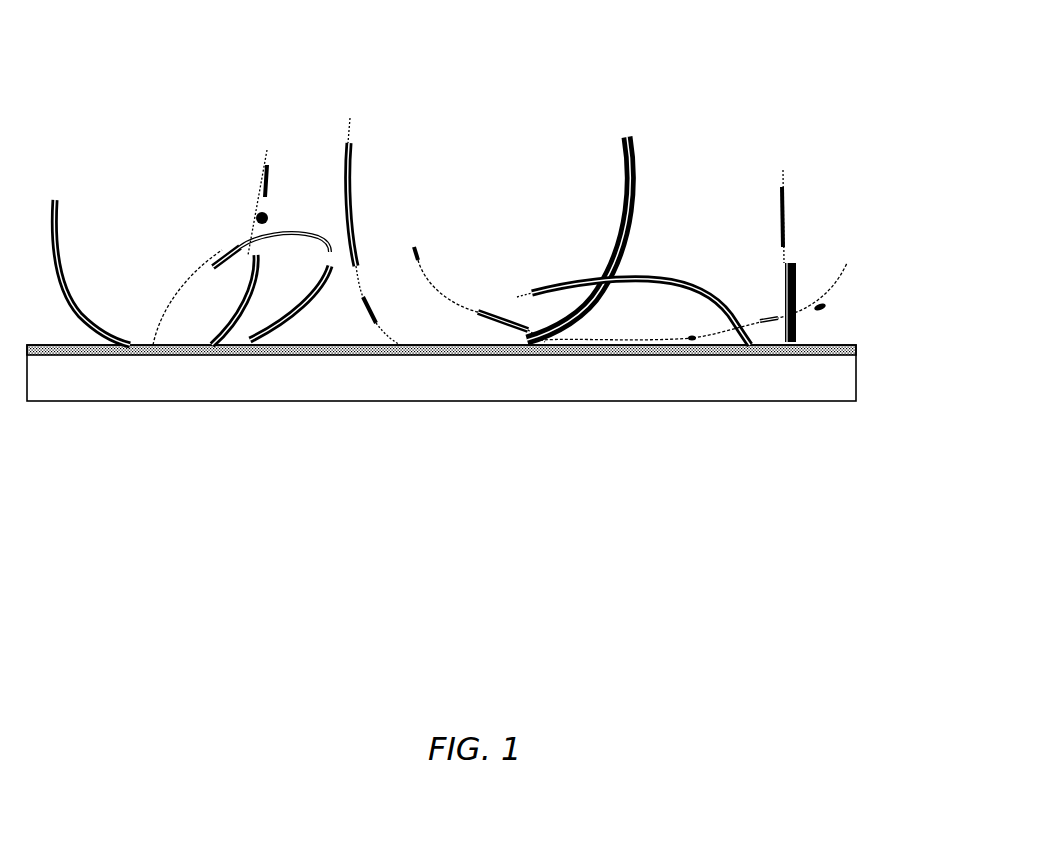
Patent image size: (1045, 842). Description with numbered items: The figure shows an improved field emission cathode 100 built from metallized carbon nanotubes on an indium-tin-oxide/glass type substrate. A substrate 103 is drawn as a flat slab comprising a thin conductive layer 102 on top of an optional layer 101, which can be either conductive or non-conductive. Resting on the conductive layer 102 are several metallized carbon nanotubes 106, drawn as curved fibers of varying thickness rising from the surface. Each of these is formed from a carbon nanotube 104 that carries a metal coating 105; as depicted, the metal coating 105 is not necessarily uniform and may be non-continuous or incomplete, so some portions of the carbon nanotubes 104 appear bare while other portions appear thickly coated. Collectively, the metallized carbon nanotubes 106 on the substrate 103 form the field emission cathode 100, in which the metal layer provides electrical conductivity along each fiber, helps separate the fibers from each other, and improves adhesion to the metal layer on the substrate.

The field emission cathode 100 is at (491, 285).
The optional layer 101 is at (815, 387).
The conductive layer 102 is at (758, 353).
The substrate 103 is at (491, 401).
The carbon nanotubes 104 is at (437, 287).
The metal coating 105 is at (337, 150).
The metallized carbon nanotubes 106 is at (504, 184).